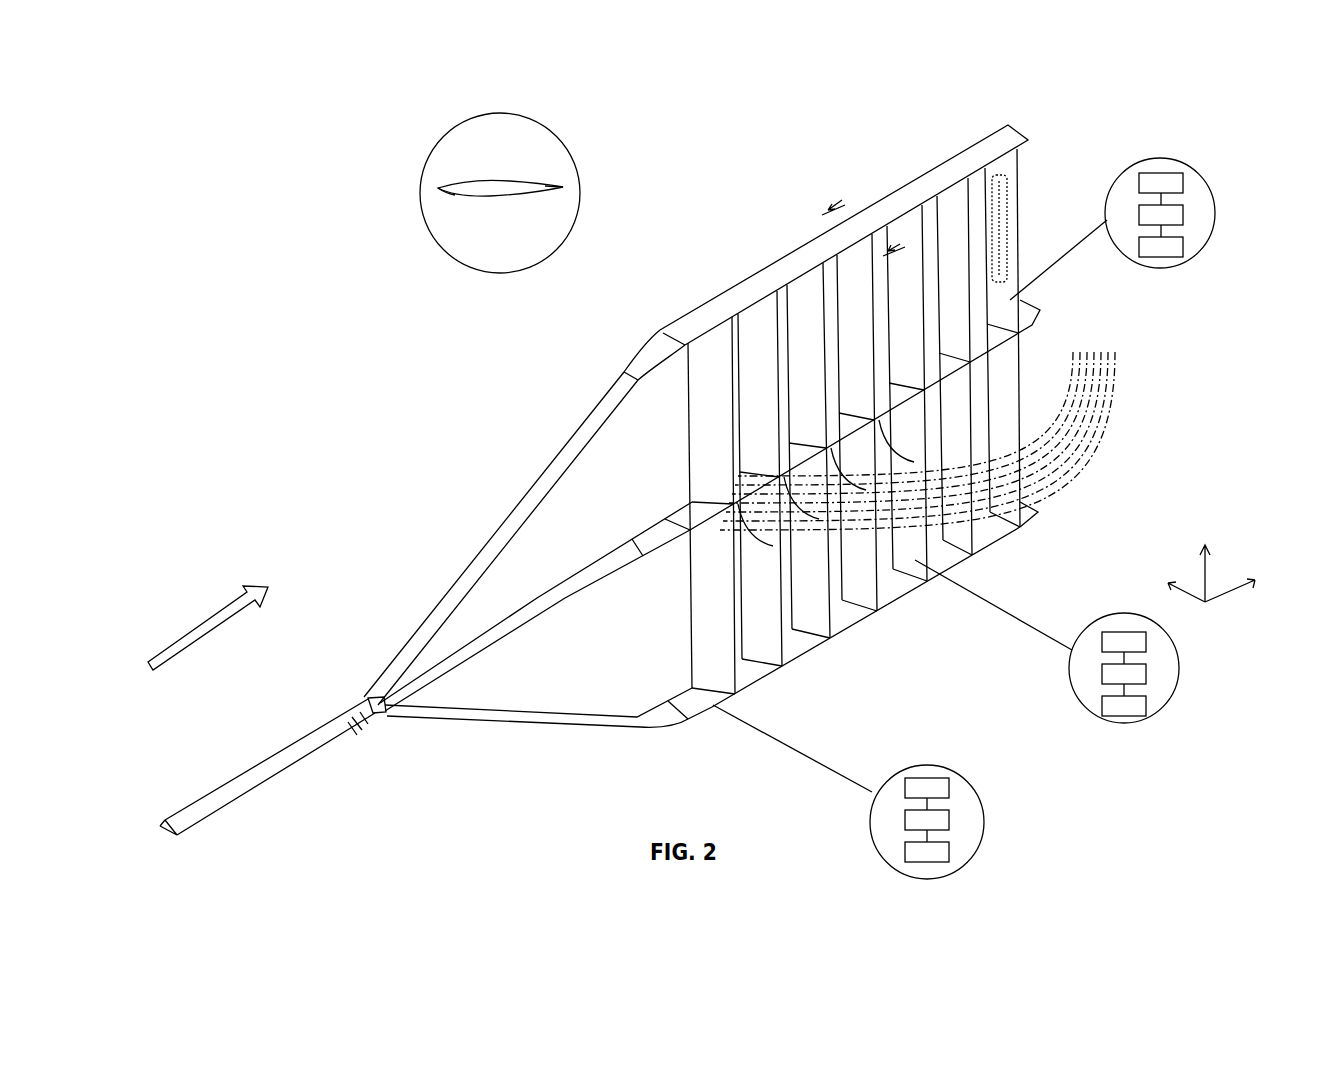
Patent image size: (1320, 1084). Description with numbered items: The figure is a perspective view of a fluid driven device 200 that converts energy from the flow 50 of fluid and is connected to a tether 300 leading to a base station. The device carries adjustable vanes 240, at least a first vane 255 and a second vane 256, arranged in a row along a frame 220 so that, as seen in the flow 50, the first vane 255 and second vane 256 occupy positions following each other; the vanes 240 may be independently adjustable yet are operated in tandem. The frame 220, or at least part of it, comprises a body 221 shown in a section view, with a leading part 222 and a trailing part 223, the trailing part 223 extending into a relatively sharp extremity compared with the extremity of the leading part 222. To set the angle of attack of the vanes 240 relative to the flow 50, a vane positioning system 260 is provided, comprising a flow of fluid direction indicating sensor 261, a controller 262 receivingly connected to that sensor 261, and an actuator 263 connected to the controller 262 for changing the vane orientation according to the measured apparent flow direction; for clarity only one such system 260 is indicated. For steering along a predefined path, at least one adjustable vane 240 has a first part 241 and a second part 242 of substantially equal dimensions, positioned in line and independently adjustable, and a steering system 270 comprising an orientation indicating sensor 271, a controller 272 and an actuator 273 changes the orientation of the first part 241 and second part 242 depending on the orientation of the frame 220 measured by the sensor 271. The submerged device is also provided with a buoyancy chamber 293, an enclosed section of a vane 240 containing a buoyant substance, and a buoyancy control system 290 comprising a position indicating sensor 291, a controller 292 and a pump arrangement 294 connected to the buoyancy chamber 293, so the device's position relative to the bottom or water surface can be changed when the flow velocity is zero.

The fluid driven device 200 is at (345, 250).
The frame 220 is at (935, 160).
The body 221 is at (483, 185).
The leading part 222 is at (450, 195).
The trailing part 223 is at (545, 190).
The adjustable vanes 240 is at (1098, 352).
The first part 241 is at (672, 433).
The second part 242 is at (672, 603).
The first vane 255 is at (763, 303).
The second vane 256 is at (712, 347).
The vane positioning system 260 is at (1122, 598).
The flow of fluid direction indicating sensor 261 is at (1124, 642).
The controller 262 is at (1124, 674).
The actuator 263 is at (1124, 706).
The steering system 270 is at (994, 769).
The orientation indicating sensor 271 is at (927, 788).
The controller 272 is at (927, 820).
The actuator 273 is at (927, 852).
The buoyancy control system 290 is at (1208, 178).
The position indicating sensor 291 is at (1161, 183).
The controller 292 is at (1161, 215).
The buoyancy chamber 293 is at (1005, 202).
The pump arrangement 294 is at (1161, 247).
The tether 300 is at (275, 758).
The flow of fluid 50 is at (178, 640).